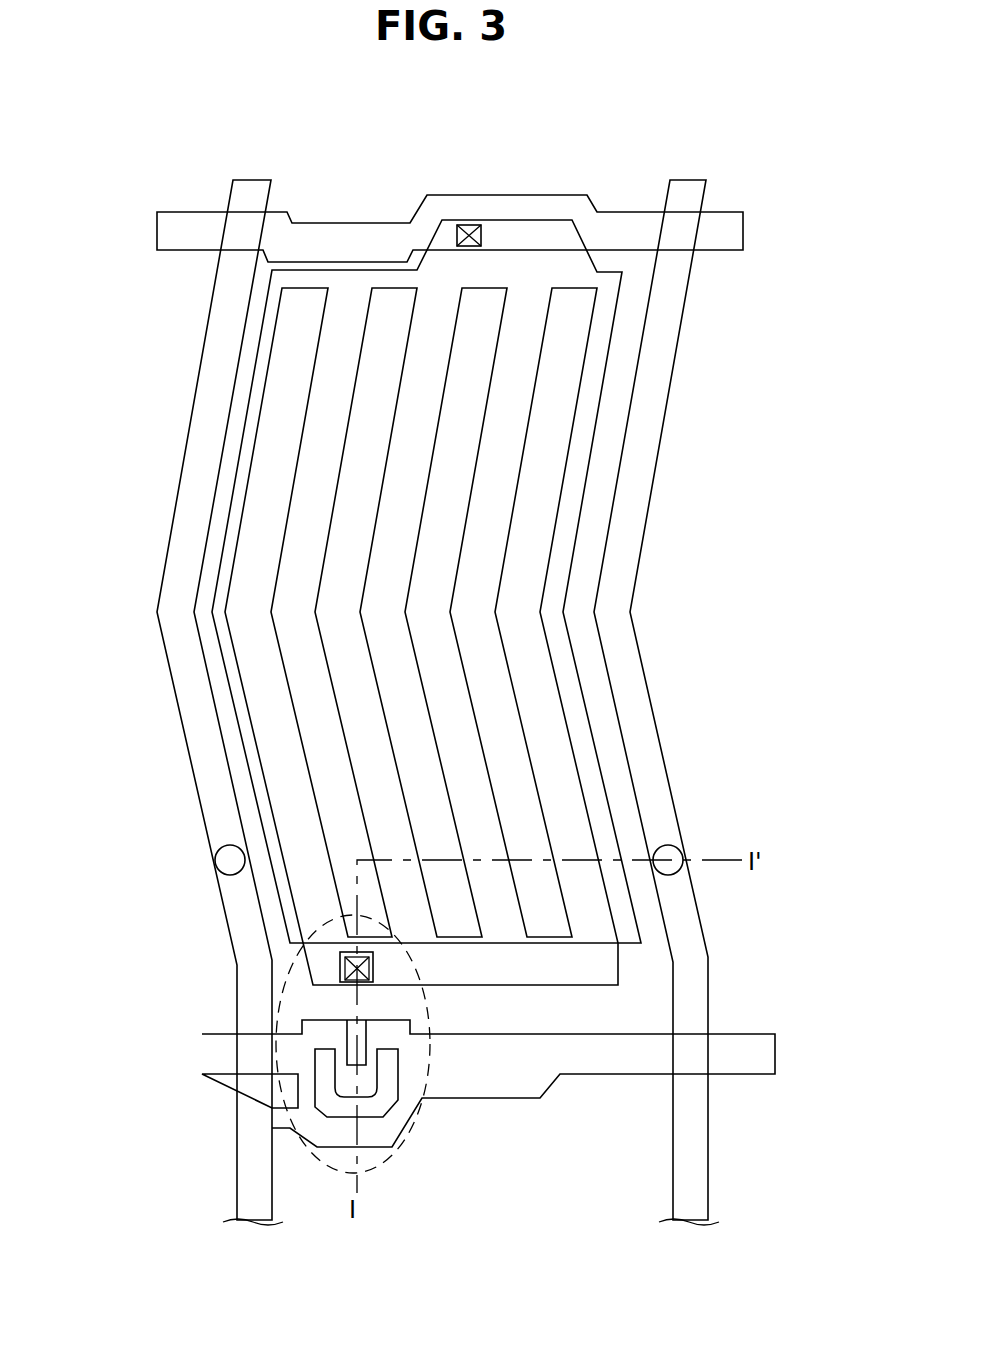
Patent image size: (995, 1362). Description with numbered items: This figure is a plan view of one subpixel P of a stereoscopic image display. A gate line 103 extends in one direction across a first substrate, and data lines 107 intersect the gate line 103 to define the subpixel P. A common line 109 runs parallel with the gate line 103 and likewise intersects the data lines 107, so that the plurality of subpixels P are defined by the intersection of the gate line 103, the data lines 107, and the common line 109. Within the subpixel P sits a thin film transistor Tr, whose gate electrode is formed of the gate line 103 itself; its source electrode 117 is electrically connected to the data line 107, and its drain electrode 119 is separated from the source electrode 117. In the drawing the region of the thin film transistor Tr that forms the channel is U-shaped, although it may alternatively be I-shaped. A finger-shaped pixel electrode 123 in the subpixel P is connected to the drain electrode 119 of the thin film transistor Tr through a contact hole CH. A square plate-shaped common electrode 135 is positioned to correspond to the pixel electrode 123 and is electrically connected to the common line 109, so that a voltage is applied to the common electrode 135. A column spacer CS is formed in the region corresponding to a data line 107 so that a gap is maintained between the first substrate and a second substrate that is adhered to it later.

The gate line 103 is at (202, 1053).
The data line 107 is at (245, 1176).
The common line 109 is at (157, 237).
The source electrode 117 is at (368, 1108).
The drain electrode 119 is at (352, 1046).
The pixel electrode 123 is at (592, 947).
The common electrode 135 is at (543, 270).
The subpixel P is at (312, 493).
The column spacer CS is at (221, 848).
The contact hole CH is at (340, 958).
The thin film transistor Tr is at (272, 1098).